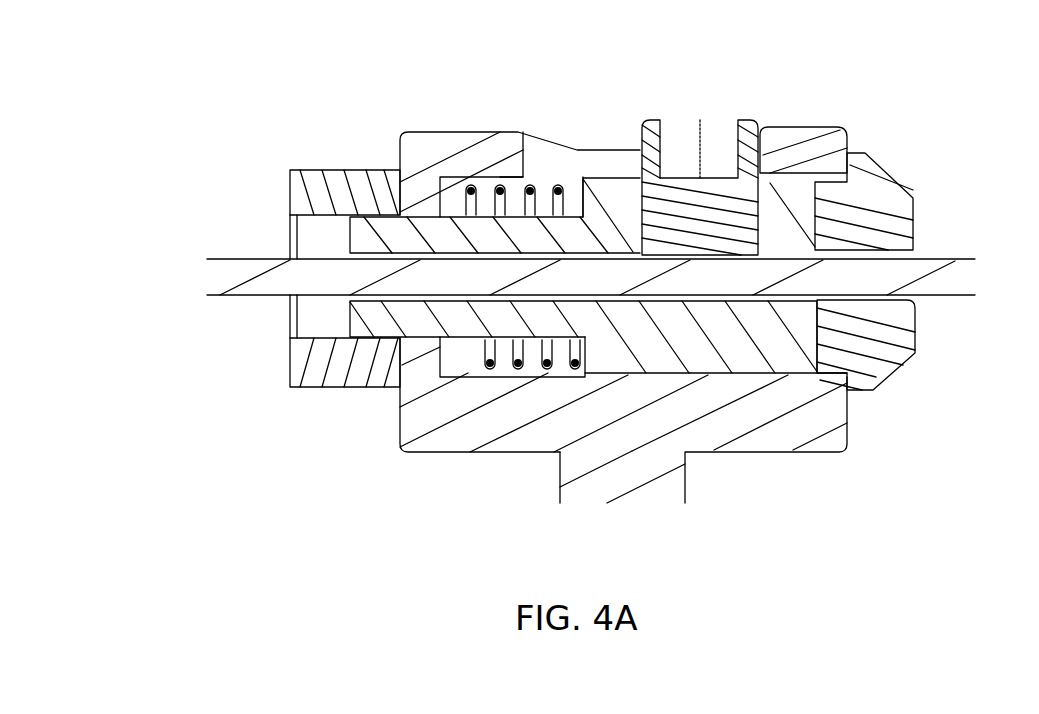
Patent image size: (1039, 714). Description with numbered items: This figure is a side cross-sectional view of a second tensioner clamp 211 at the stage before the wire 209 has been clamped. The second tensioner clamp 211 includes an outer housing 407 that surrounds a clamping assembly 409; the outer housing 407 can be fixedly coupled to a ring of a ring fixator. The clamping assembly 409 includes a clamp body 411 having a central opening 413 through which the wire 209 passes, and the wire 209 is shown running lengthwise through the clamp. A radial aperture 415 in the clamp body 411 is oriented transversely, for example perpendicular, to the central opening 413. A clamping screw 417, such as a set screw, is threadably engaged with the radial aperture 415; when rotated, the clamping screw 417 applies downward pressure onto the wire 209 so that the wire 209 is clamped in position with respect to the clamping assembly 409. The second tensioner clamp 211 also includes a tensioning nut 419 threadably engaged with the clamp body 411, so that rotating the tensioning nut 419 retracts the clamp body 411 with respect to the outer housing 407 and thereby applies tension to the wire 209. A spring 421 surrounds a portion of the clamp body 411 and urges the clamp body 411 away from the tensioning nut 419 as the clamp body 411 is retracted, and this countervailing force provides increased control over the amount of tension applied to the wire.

The second tensioner clamp 211 is at (218, 85).
The wire 209 is at (249, 299).
The tensioning nut 419 is at (340, 163).
The clamp body 411 is at (345, 238).
The clamping assembly 409 is at (588, 170).
The spring 421 is at (453, 363).
The radial aperture 415 is at (641, 172).
The clamping screw 417 is at (762, 124).
The central opening 413 is at (915, 248).
The outer housing 407 is at (836, 462).